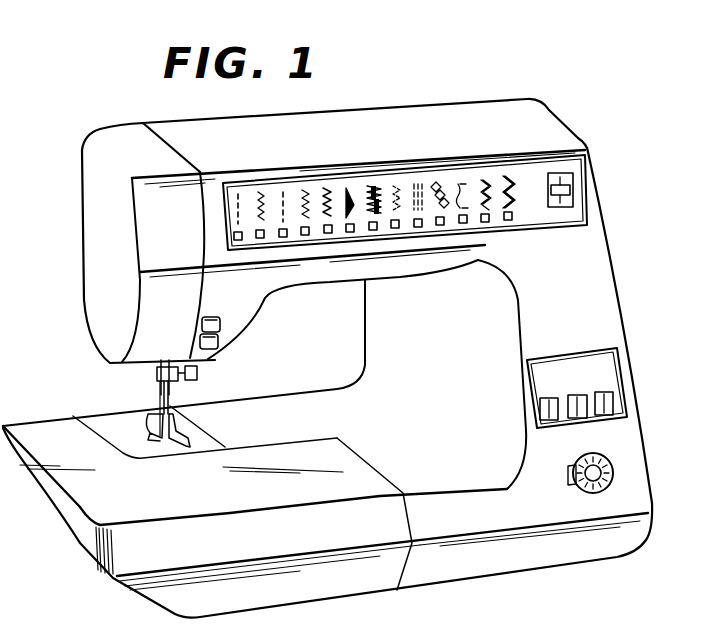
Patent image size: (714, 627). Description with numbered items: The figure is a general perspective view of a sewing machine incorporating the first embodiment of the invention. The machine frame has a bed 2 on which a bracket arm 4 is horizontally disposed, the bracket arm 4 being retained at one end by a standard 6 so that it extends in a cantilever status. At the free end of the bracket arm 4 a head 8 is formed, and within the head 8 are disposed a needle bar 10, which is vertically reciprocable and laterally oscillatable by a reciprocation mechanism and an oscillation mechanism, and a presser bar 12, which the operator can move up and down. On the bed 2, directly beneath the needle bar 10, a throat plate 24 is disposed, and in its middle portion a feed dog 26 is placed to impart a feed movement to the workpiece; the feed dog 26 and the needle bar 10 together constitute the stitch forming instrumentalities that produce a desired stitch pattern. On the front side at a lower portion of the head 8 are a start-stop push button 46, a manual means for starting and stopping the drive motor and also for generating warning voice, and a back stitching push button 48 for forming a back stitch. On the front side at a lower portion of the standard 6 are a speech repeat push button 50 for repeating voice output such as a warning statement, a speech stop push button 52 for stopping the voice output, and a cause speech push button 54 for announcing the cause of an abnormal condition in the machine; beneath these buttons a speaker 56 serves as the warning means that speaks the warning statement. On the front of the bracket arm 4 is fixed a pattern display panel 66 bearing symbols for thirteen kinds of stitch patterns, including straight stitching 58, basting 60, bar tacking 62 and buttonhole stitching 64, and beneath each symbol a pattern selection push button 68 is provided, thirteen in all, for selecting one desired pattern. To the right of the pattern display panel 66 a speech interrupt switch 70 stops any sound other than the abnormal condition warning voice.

The bed 2 is at (485, 568).
The bracket arm 4 is at (325, 273).
The standard 6 is at (608, 292).
The head 8 is at (88, 283).
The needle bar 10 is at (165, 366).
The presser bar 12 is at (160, 372).
The throat plate 24 is at (126, 421).
The feed dog 26 is at (160, 437).
The start-stop push button 46 is at (212, 343).
The back stitching push button 48 is at (220, 325).
The speech repeat push button 50 is at (542, 413).
The speech stop push button 52 is at (577, 413).
The cause speech push button 54 is at (605, 400).
The speaker 56 is at (578, 490).
The straight stitching symbol 58 is at (229, 184).
The basting symbol 60 is at (275, 184).
The bar tacking symbol 62 is at (326, 182).
The buttonhole stitching symbol 64 is at (386, 178).
The pattern display panel 66 is at (522, 173).
The pattern selection push button 68 is at (466, 221).
The speech interrupt switch 70 is at (566, 204).